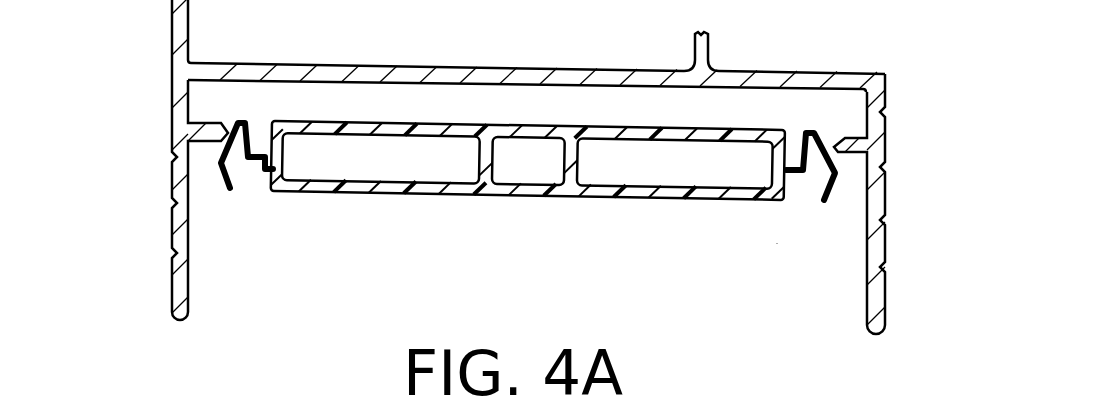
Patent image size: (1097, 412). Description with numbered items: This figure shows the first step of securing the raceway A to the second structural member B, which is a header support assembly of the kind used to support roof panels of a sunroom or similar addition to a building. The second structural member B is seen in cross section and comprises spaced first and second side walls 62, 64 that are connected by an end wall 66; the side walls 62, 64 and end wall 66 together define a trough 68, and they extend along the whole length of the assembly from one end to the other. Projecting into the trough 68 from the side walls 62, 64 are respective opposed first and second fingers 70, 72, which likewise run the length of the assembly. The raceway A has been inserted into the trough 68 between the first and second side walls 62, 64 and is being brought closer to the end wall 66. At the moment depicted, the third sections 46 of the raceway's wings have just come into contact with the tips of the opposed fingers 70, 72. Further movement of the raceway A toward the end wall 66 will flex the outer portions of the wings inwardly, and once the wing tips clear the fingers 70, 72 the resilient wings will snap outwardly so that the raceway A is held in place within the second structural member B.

The third section 46 is at (877, 166).
The first side wall 62 is at (884, 251).
The second side wall 64 is at (180, 220).
The end wall 66 is at (443, 66).
The trough 68 is at (777, 243).
The first finger 70 is at (853, 140).
The second finger 72 is at (213, 127).
The raceway A is at (572, 206).
The second structural member B is at (776, 68).